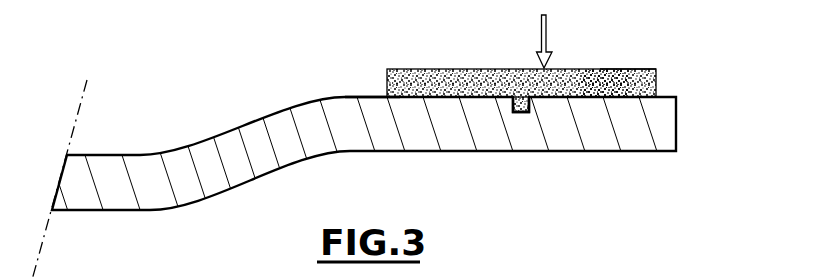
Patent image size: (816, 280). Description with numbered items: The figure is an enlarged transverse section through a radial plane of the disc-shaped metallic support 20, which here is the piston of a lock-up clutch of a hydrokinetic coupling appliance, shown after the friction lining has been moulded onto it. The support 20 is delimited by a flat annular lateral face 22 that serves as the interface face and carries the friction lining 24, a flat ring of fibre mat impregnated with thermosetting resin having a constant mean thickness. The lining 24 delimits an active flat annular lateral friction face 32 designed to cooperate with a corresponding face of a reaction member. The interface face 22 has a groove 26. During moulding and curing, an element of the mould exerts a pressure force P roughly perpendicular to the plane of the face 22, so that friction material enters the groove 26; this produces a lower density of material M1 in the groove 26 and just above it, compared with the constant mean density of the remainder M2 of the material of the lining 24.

The metallic support 20 is at (677, 113).
The flat annular lateral face 22 is at (370, 97).
The friction lining 24 is at (660, 63).
The groove 26 is at (514, 106).
The active flat annular lateral friction face 32 is at (473, 69).
The material received in the groove M1 is at (522, 108).
The remainder of the material of the lining M2 is at (603, 80).
The pressure force P is at (553, 41).